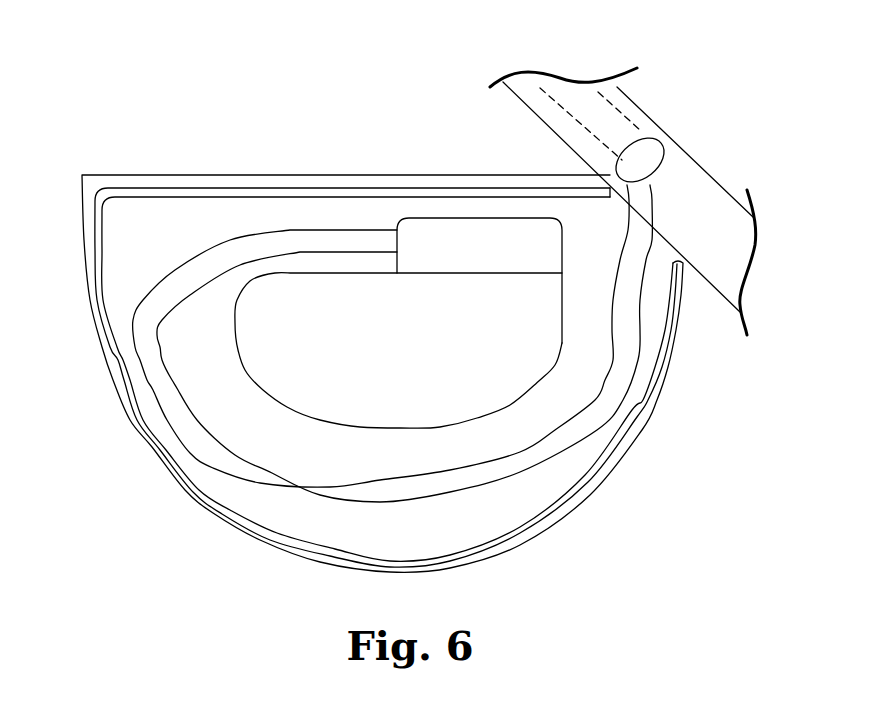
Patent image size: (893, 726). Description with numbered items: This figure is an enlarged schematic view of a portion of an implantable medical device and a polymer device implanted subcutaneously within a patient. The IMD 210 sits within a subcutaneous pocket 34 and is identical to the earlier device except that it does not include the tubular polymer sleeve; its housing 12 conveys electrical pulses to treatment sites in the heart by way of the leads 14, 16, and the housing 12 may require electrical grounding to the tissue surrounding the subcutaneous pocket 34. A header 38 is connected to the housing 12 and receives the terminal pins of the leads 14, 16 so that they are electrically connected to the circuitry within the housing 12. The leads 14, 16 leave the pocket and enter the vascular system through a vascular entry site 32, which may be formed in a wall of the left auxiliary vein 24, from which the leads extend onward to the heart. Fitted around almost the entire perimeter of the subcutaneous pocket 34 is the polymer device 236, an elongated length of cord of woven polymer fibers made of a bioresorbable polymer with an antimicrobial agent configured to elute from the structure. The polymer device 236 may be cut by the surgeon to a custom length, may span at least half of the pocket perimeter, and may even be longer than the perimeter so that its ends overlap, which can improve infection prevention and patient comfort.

The housing 12 is at (477, 418).
The lead 14 is at (562, 88).
The lead 16 is at (615, 88).
The left auxiliary vein 24 is at (718, 173).
The vascular entry site 32 is at (652, 135).
The subcutaneous pocket 34 is at (102, 347).
The header 38 is at (477, 218).
The IMD 210 is at (415, 200).
The polymer device 236 is at (265, 188).